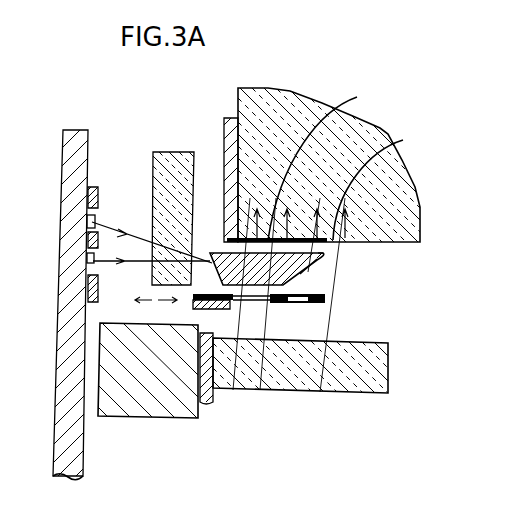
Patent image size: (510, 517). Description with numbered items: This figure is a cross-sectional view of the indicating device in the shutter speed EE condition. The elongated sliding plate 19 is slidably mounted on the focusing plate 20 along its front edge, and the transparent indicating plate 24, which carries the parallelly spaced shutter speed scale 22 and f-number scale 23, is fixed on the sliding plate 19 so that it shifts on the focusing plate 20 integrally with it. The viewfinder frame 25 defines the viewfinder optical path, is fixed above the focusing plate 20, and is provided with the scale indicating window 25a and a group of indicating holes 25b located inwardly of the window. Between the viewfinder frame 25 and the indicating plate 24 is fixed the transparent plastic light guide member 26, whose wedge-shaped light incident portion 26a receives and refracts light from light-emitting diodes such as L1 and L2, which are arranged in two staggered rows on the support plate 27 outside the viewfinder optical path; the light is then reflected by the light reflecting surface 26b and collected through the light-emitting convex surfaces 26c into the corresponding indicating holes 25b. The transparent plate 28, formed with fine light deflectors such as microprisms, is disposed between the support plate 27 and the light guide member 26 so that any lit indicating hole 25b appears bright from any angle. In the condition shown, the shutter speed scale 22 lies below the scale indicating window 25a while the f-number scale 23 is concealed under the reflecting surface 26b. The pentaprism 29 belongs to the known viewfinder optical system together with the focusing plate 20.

The sliding plate 19 is at (185, 321).
The focusing plate 20 is at (358, 381).
The shutter speed scale 22 is at (258, 301).
The f-number scale 23 is at (305, 303).
The indicating plate 24 is at (323, 299).
The viewfinder frame 25 is at (333, 241).
The scale indicating window 25a is at (334, 162).
The indicating holes 25b is at (390, 184).
The light guide member 26 is at (237, 240).
The light incident portion 26a is at (212, 278).
The light reflecting surface 26b is at (303, 273).
The light-emitting convex surfaces 26c is at (325, 254).
The support plate 27 is at (75, 163).
The transparent plate 28 is at (177, 158).
The pentaprism 29 is at (242, 108).
The light-emitting diode L1 is at (148, 248).
The light-emitting diode L2 is at (149, 225).